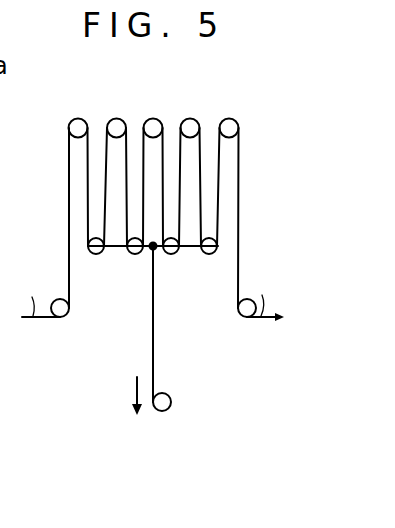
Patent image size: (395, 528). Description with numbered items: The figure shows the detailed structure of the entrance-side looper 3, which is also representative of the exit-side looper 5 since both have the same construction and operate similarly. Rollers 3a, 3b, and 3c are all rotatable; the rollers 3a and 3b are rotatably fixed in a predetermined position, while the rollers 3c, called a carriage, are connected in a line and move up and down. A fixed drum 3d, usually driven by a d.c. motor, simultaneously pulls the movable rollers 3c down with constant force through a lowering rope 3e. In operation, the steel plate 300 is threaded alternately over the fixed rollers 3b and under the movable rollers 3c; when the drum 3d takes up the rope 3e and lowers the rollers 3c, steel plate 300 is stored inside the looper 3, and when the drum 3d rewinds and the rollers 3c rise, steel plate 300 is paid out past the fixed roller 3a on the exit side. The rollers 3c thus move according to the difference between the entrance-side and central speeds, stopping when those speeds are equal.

The entrance-side looper 3 is at (51, 116).
The exit-side looper 5 is at (107, 75).
The fixed rollers 3a is at (60, 318).
The fixed rollers 3b is at (112, 118).
The movable rollers 3c is at (128, 253).
The fixed drum 3d is at (161, 411).
The lowering rope 3e is at (154, 354).
The steel plate 300 is at (238, 155).